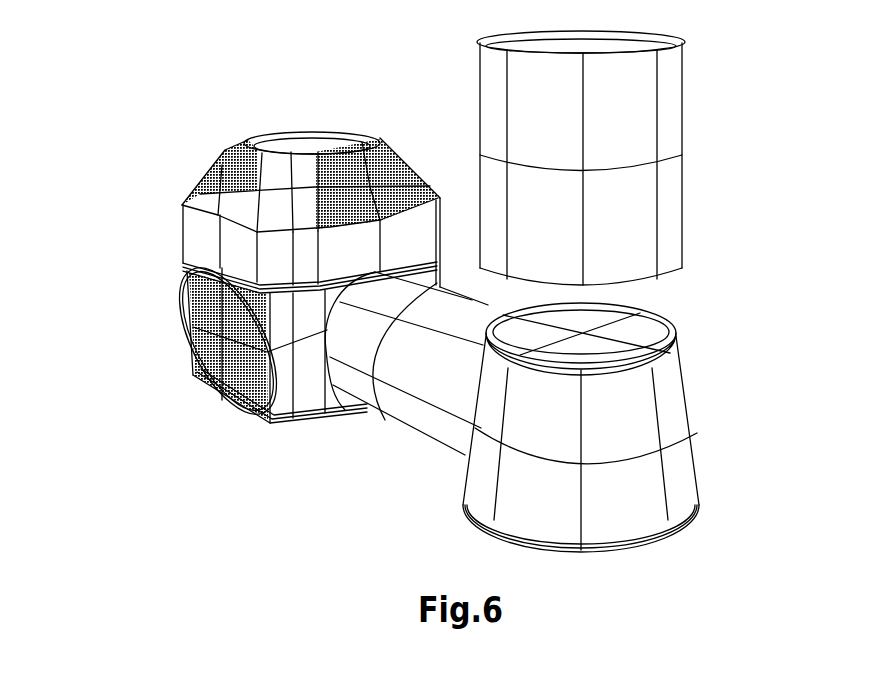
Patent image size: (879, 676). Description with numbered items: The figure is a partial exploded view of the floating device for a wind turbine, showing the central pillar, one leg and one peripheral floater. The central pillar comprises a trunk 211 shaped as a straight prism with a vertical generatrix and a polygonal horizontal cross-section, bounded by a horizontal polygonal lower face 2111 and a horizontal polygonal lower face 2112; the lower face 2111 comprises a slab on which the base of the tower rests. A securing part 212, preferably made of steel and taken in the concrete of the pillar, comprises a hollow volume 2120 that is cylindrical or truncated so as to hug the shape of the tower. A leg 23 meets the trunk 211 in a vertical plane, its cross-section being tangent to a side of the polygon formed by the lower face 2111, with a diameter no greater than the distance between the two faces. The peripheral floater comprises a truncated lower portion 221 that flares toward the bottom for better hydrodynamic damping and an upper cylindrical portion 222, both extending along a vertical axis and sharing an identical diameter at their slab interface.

The securing part 212 is at (290, 143).
The hollow volume 2120 is at (307, 138).
The trunk 211 is at (190, 325).
The lower face 2111 is at (200, 385).
The lower face 2112 is at (190, 270).
The leg 23 is at (405, 412).
The truncated lower portion 221 is at (675, 405).
The upper cylindrical portion 222 is at (675, 110).